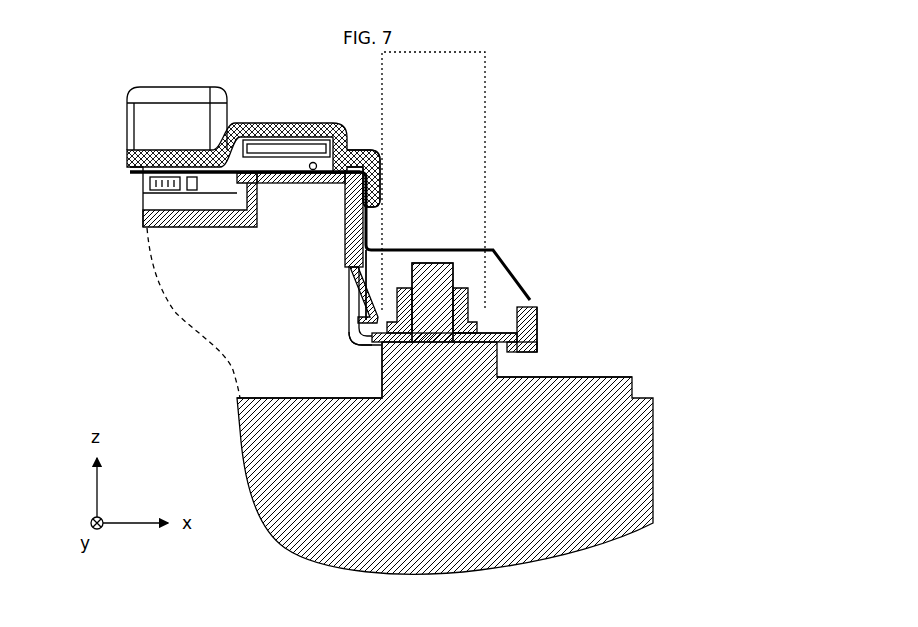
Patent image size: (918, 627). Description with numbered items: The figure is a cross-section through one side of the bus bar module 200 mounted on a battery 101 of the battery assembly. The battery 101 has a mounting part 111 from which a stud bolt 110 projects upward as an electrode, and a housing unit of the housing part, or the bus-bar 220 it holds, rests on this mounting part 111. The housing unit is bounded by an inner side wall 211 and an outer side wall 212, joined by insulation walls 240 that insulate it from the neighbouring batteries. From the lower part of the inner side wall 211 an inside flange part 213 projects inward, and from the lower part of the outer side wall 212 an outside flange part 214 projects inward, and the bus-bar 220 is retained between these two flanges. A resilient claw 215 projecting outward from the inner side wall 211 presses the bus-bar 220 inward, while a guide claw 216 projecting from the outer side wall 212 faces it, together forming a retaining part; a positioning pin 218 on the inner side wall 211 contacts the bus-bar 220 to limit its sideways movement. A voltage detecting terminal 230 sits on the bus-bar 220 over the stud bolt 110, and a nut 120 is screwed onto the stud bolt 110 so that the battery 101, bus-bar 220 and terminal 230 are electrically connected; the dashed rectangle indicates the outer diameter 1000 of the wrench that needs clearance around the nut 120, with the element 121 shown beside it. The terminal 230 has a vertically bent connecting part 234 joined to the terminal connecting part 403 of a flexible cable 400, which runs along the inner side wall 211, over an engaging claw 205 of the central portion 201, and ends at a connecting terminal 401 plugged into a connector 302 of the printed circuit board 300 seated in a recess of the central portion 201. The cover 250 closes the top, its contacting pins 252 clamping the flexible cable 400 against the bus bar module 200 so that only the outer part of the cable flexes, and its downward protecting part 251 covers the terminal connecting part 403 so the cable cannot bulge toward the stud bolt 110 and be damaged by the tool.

The battery 101 is at (653, 457).
The mounting part 111 is at (500, 372).
The stud bolt 110 is at (418, 263).
The nut 120 is at (462, 287).
The right engaging member 121 is at (475, 322).
The voltage detecting terminal 230 is at (485, 328).
The guide claw 216 is at (530, 300).
The outside flange part 214 is at (540, 345).
The outer side wall 212 is at (540, 318).
The positioning pin 218 is at (372, 337).
The inside flange part 213 is at (378, 360).
The insulation wall 240 is at (492, 245).
The inner side wall 211 is at (347, 245).
The resilient claw 215 is at (350, 290).
The bus-bar 220 is at (383, 342).
The connecting part 234 is at (363, 290).
The terminal connecting part 403 is at (377, 237).
The contacting pin 252 is at (333, 183).
The printed circuit board 300 is at (147, 202).
The connector 302 is at (150, 182).
The central portion 201 is at (173, 225).
The bus bar module 200 is at (217, 237).
The cover 250 is at (292, 123).
The engaging claw 205 is at (300, 158).
The protecting part 251 is at (372, 175).
The connecting terminal 401 is at (197, 177).
The flexible cable 400 is at (237, 175).
The outer diameter of the tool 1000 is at (485, 140).